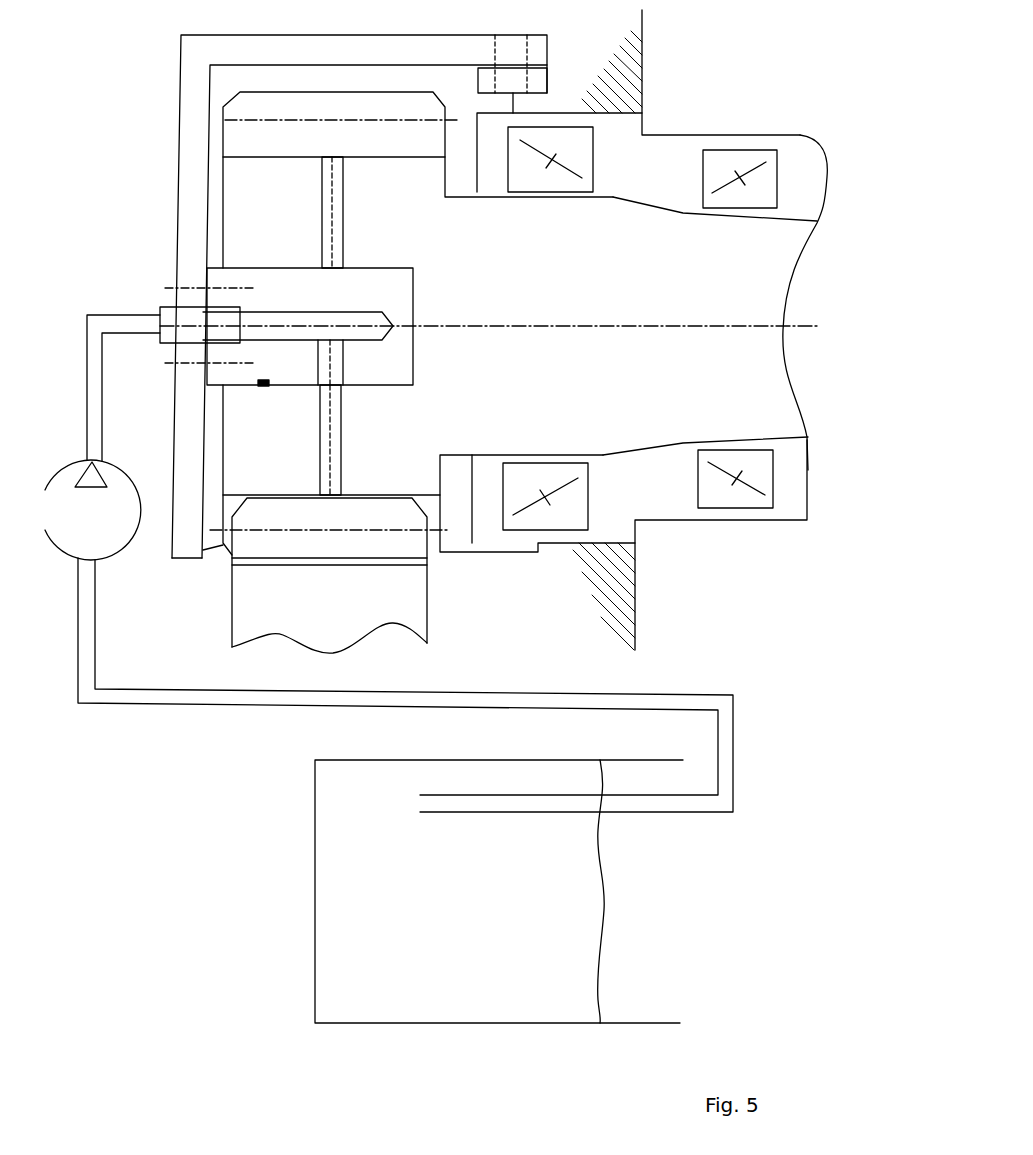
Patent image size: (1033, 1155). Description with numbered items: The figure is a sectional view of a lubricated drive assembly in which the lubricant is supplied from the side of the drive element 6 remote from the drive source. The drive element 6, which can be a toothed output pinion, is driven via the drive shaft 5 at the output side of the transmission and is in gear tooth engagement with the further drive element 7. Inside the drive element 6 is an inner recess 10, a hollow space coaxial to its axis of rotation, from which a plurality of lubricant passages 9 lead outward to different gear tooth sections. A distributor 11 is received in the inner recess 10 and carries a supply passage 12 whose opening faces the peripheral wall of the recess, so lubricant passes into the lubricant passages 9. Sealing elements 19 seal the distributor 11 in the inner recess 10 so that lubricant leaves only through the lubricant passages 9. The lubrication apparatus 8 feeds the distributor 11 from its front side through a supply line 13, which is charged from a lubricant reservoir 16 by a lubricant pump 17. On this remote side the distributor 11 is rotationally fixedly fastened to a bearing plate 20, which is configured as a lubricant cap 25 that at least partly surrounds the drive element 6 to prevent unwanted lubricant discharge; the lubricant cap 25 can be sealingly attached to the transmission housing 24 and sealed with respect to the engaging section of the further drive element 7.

The drive shaft 5 is at (770, 288).
The drive element 6 is at (237, 172).
The further drive element 7 is at (415, 620).
The lubrication apparatus 8 is at (134, 300).
The lubricant passages 9 is at (340, 222).
The inner recess 10 is at (393, 270).
The distributor 11 is at (403, 296).
The supply passage 12 is at (335, 369).
The supply line 13 is at (133, 327).
The lubricant reservoir 16 is at (322, 940).
The lubricant pump 17 is at (68, 547).
The sealing elements 19 is at (267, 262).
The bearing plate 20 is at (188, 232).
The transmission housing 24 is at (630, 60).
The lubricant cap 25 is at (323, 296).